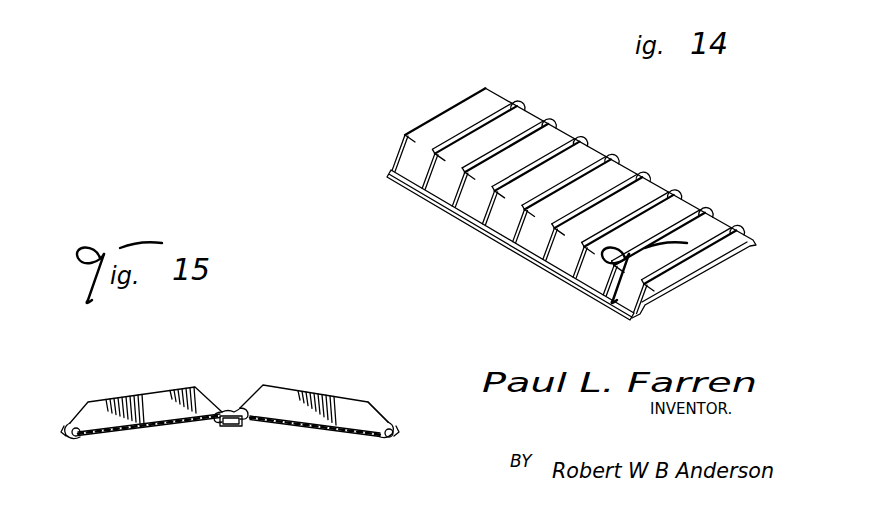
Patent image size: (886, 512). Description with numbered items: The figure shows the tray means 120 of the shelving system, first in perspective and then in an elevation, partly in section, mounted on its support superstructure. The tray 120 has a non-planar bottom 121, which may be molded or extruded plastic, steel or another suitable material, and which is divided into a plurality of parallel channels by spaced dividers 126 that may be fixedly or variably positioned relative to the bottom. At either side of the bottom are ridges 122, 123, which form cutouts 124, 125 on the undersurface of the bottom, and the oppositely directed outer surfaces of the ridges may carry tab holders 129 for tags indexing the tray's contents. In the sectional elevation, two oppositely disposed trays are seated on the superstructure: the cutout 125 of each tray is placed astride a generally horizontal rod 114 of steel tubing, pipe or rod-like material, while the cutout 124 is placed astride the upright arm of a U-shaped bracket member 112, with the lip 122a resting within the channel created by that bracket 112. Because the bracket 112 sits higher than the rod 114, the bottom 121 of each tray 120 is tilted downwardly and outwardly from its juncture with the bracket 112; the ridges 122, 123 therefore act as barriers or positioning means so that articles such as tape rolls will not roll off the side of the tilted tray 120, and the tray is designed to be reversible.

In FIG. 14, the tray means 120 is at (684, 178).
In FIG. 14, the non-planar bottom 121 is at (466, 132).
In FIG. 14, the ridge 122 is at (413, 175).
In FIG. 14, the ridge 123 is at (558, 125).
In FIG. 14, the spaced dividers 126 is at (703, 217).
In FIG. 14, the tab holder 129 is at (457, 213).
In FIG. 15, the tab holder 129 is at (388, 427).
In FIG. 15, the U-shaped bracket member 112 is at (227, 427).
In FIG. 15, the rod 114 is at (72, 438).
In FIG. 15, the lip 122a is at (232, 410).
In FIG. 15, the cutout 124 is at (247, 427).
In FIG. 15, the cutout 125 is at (80, 438).